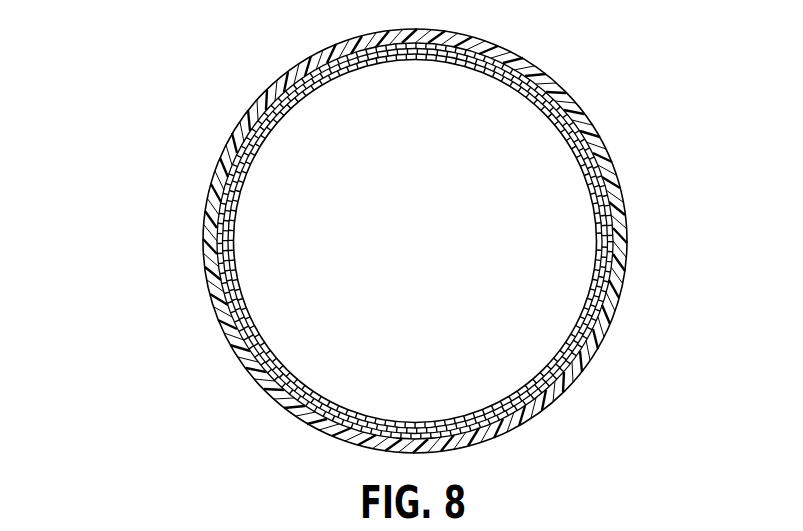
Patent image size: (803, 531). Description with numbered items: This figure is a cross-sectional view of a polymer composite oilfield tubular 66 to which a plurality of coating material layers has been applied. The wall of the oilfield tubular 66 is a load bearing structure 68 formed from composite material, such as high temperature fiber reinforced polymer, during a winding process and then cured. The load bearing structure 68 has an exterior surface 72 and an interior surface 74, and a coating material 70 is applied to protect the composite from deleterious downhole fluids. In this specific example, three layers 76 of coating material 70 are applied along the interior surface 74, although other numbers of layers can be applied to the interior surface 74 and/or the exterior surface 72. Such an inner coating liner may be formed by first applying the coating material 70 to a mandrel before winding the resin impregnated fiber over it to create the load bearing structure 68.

The oilfield tubular 66 is at (147, 101).
The load bearing structure 68 is at (206, 270).
The coating material 70 is at (222, 216).
The exterior surface 72 is at (622, 190).
The interior surface 74 is at (590, 340).
The layers 76 is at (608, 228).